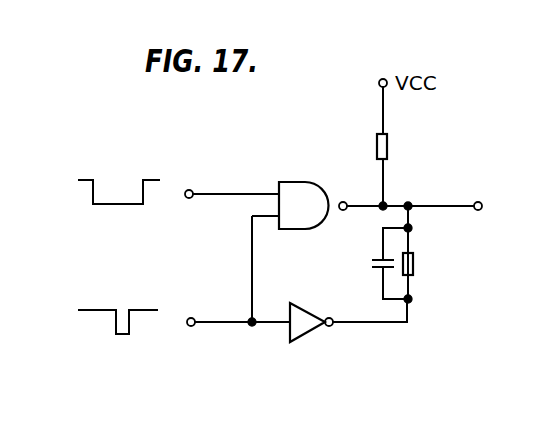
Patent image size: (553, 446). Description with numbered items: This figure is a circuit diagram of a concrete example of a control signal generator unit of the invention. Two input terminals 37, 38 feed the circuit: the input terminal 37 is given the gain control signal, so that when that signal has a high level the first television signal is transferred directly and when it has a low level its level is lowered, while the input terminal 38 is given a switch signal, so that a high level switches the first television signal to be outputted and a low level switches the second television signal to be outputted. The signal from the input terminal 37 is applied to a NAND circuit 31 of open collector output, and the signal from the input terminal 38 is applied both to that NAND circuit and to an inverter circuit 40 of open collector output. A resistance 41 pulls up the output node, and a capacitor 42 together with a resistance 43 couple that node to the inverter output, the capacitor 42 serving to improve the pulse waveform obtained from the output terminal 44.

The NAND gate 31 is at (305, 182).
The input terminal 37 is at (189, 190).
The input terminal 38 is at (191, 318).
The inverter circuit 40 is at (294, 343).
The resistance 41 is at (388, 147).
The capacitor 42 is at (371, 264).
The resistance 43 is at (414, 265).
The output terminal 44 is at (483, 202).